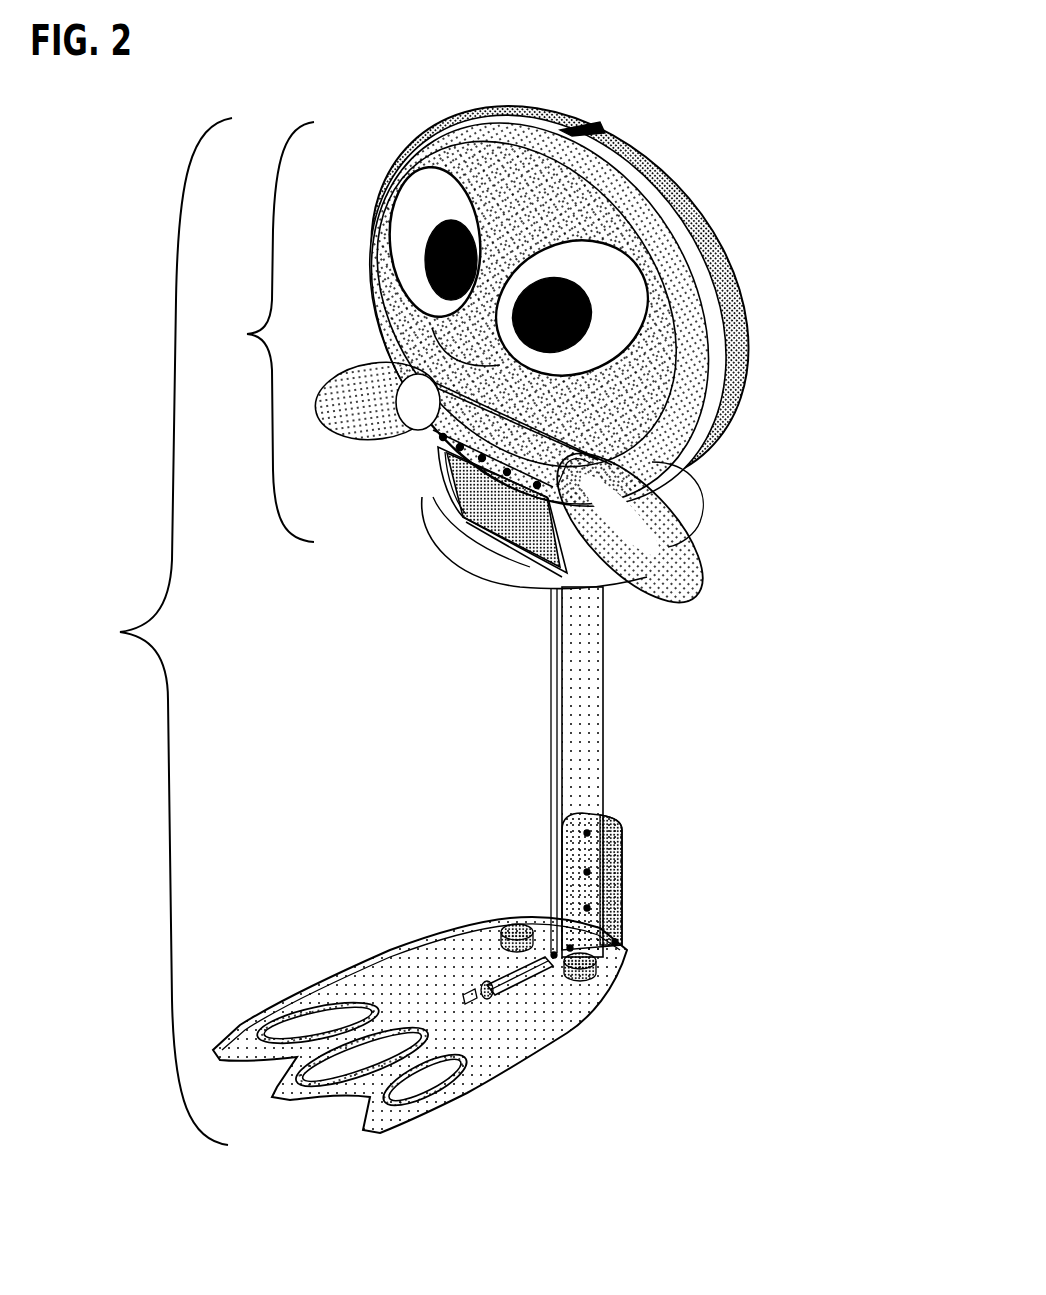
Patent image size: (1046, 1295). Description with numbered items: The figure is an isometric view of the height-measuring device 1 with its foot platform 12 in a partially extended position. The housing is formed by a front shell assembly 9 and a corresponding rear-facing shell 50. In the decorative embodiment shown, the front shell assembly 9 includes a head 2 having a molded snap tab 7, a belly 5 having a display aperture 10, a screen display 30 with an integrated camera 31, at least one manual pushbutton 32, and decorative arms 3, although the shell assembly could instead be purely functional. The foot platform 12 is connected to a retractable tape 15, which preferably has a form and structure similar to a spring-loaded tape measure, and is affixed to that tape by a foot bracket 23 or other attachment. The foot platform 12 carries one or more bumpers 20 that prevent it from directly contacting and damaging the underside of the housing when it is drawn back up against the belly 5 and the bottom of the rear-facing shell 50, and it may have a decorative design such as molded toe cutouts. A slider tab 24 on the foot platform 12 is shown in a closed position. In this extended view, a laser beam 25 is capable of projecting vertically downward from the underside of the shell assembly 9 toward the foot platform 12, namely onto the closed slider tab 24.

The height-measuring device 1 is at (161, 631).
The head 2 is at (648, 248).
The decorative arms 3 is at (362, 388).
The belly 5 is at (622, 593).
The molded snap tab 7 is at (565, 130).
The front shell assembly 9 is at (265, 332).
The display aperture 10 is at (442, 493).
The foot platform 12 is at (540, 1062).
The retractable tape 15 is at (603, 740).
The bumpers 20 is at (607, 993).
The foot bracket 23 is at (625, 877).
The slider tab 24 is at (493, 962).
The laser beam 25 is at (548, 715).
The screen display 30 is at (503, 530).
The integrated camera 31 is at (466, 522).
The manual pushbutton 32 is at (432, 440).
The rear-facing shell 50 is at (640, 168).